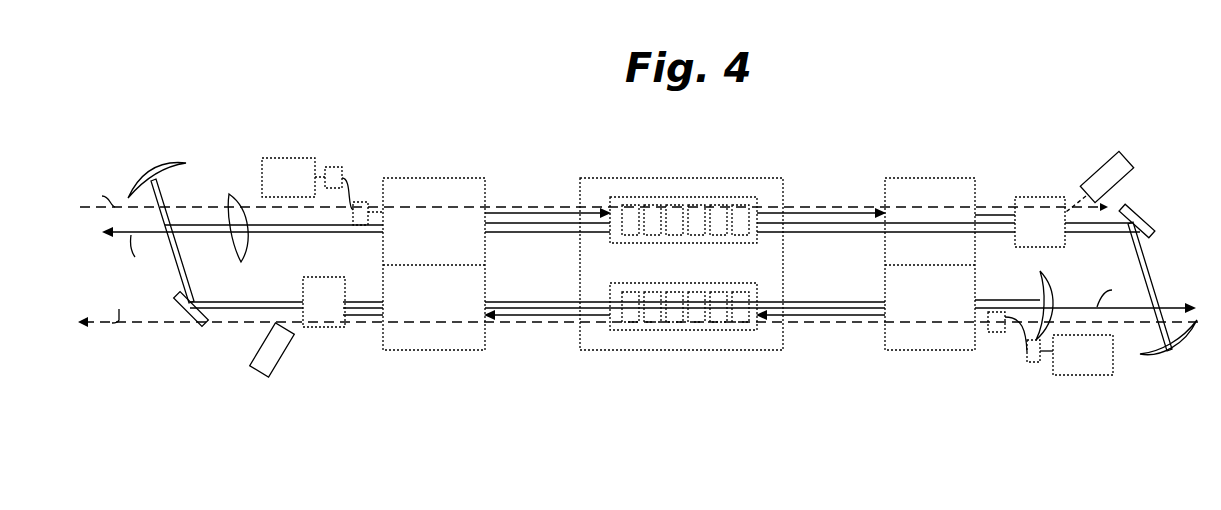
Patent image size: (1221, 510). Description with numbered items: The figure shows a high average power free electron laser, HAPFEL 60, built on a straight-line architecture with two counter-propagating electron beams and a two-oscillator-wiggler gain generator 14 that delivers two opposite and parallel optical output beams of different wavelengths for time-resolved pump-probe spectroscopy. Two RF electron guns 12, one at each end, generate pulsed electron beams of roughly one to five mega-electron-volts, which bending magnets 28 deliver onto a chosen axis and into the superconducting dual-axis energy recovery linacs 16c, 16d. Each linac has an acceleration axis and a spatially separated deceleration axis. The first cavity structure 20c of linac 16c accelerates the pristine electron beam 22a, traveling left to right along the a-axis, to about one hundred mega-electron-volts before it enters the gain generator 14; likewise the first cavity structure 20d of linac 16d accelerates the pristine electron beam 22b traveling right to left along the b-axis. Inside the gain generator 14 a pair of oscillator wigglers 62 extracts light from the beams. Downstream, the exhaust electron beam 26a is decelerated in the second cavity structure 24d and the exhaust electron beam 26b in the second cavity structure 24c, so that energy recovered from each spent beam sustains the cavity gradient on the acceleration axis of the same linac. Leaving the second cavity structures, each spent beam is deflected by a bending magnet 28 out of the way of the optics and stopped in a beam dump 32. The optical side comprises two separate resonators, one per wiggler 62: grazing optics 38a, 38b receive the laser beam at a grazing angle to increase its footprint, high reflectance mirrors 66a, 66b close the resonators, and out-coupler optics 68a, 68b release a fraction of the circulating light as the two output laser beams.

The RF electron gun 12 is at (687, 266).
The gain generator 14 is at (654, 177).
The superconducting dual-axis energy recovery linac 16c is at (432, 156).
The superconducting dual-axis energy recovery linac 16d is at (926, 156).
The first cavity structure 20c is at (434, 243).
The first cavity structure 20d is at (930, 292).
The pristine electron beam 22a is at (528, 211).
The pristine electron beam 22b is at (822, 318).
The second cavity structure 24c is at (433, 292).
The second cavity structure 24d is at (930, 243).
The exhaust electron beam 26a is at (836, 211).
The exhaust electron beam 26b is at (540, 318).
The bending magnet 28 is at (363, 201).
The beam dump 32 is at (284, 353).
The grazing optic 38a is at (189, 317).
The grazing optic 38b is at (1143, 211).
The HAPFEL 60 is at (192, 128).
The oscillator wiggler 62 is at (685, 197).
The high reflectance mirror 66a is at (178, 166).
The high reflectance mirror 66b is at (1162, 360).
The out-coupler optic 68a is at (1041, 278).
The out-coupler optic 68b is at (237, 215).